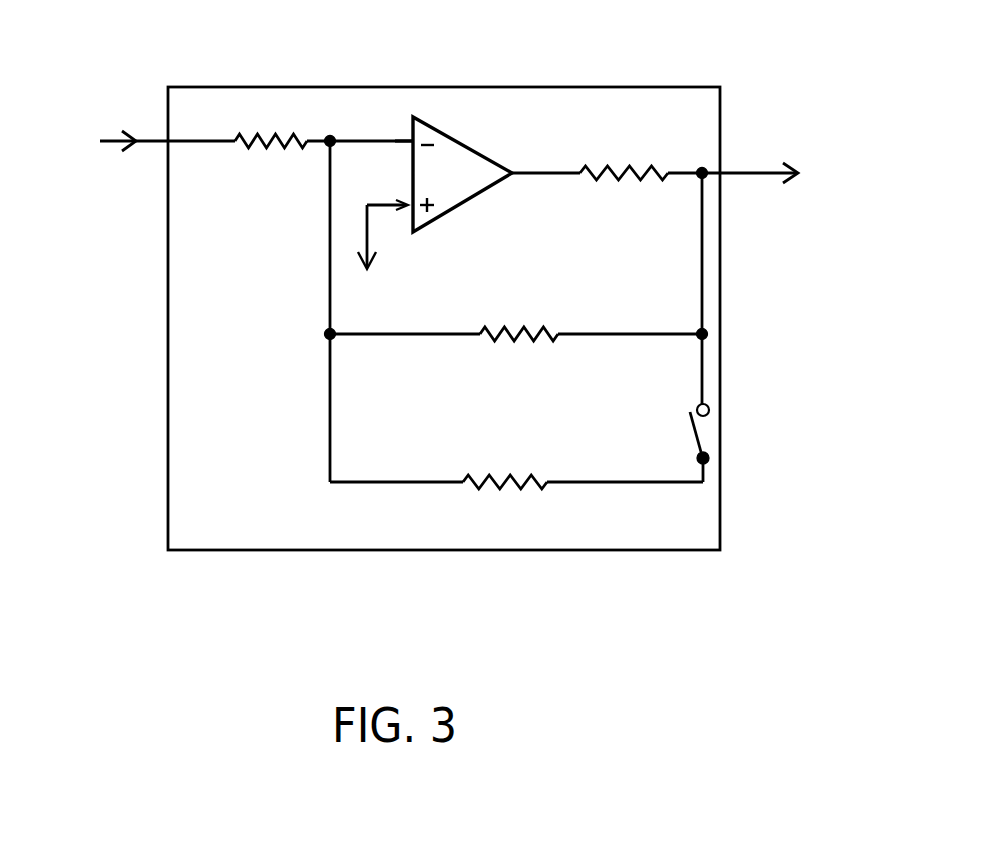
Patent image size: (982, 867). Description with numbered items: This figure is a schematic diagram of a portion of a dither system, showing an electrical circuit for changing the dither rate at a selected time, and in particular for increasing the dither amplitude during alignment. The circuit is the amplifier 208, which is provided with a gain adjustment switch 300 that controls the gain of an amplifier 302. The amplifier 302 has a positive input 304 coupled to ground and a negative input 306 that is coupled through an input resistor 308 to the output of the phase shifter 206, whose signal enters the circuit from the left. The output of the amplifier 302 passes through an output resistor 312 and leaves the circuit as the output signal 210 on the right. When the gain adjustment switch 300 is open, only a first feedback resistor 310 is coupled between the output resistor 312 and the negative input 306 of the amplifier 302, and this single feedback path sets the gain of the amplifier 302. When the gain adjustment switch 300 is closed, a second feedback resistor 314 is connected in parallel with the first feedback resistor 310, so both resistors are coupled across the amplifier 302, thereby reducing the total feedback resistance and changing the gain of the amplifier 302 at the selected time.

The phase shifter 206 is at (136, 140).
The amplifier 208 is at (543, 86).
The output signal 210 is at (786, 180).
The gain adjustment switch 300 is at (697, 448).
The amplifier 302 is at (470, 143).
The positive input 304 is at (398, 213).
The negative input 306 is at (408, 141).
The input resistor 308 is at (256, 152).
The first feedback resistor 310 is at (530, 332).
The output resistor 312 is at (618, 170).
The second feedback resistor 314 is at (508, 482).